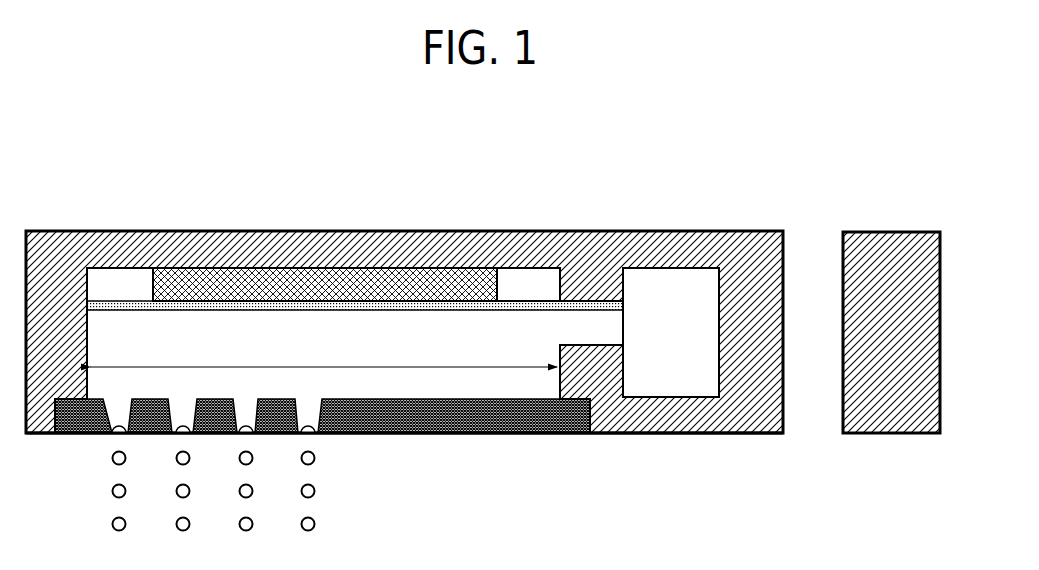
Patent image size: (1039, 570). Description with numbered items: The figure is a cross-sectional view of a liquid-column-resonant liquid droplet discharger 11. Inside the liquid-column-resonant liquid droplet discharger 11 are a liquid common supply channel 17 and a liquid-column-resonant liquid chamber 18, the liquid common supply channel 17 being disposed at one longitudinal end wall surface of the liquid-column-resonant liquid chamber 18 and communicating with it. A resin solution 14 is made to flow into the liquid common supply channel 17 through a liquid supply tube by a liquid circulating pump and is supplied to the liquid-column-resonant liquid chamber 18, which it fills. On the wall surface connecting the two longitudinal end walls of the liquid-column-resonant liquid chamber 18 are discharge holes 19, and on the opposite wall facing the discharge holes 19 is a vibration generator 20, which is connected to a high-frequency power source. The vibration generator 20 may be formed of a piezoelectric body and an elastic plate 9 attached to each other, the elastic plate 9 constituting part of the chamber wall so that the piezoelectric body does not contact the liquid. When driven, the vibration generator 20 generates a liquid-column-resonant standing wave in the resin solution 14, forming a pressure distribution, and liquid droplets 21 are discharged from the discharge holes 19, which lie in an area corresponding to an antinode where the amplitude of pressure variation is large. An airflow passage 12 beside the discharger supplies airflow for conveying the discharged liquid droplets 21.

The elastic plate 9 is at (528, 296).
The liquid-column-resonant liquid droplet discharger 11 is at (750, 232).
The airflow passage 12 is at (815, 430).
The resin solution 14 is at (461, 385).
The liquid common supply channel 17 is at (693, 283).
The liquid-column-resonant liquid chamber 18 is at (373, 331).
The discharge holes 19 is at (117, 439).
The vibration generator 20 is at (248, 280).
The liquid droplets 21 is at (316, 527).